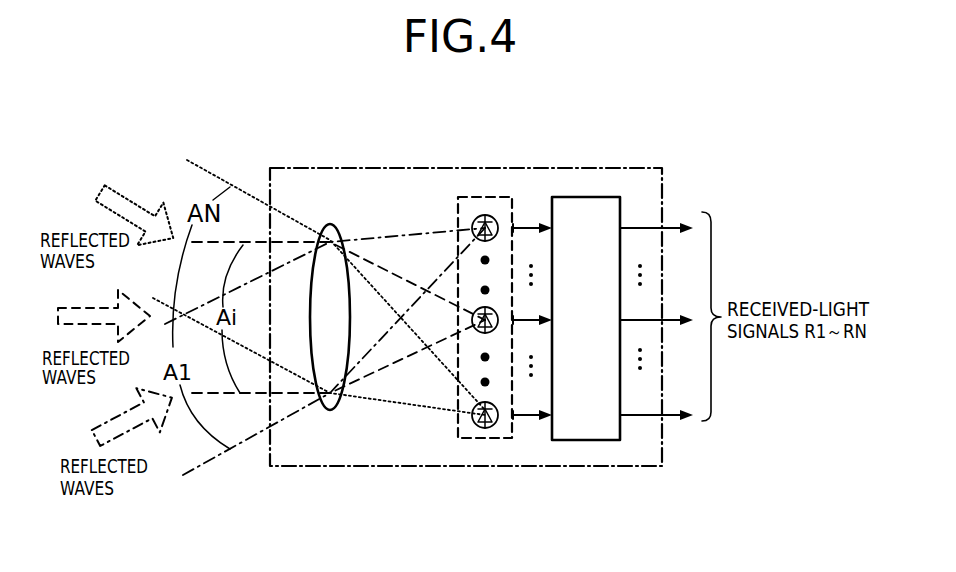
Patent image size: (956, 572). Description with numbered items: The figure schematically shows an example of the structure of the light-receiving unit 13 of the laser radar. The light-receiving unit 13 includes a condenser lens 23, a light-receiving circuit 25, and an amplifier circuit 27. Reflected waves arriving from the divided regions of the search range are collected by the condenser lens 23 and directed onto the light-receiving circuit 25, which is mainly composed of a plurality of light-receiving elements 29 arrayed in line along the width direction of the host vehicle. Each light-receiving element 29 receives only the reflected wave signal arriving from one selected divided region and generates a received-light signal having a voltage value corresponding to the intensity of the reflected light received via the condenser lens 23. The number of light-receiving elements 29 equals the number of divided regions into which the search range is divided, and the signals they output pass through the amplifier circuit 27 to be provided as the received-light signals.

The light-receiving unit 13 is at (348, 167).
The condenser lens 23 is at (330, 226).
The light-receiving circuit 25 is at (458, 198).
The amplifier circuit 27 is at (600, 197).
The light-receiving element 29 is at (484, 214).